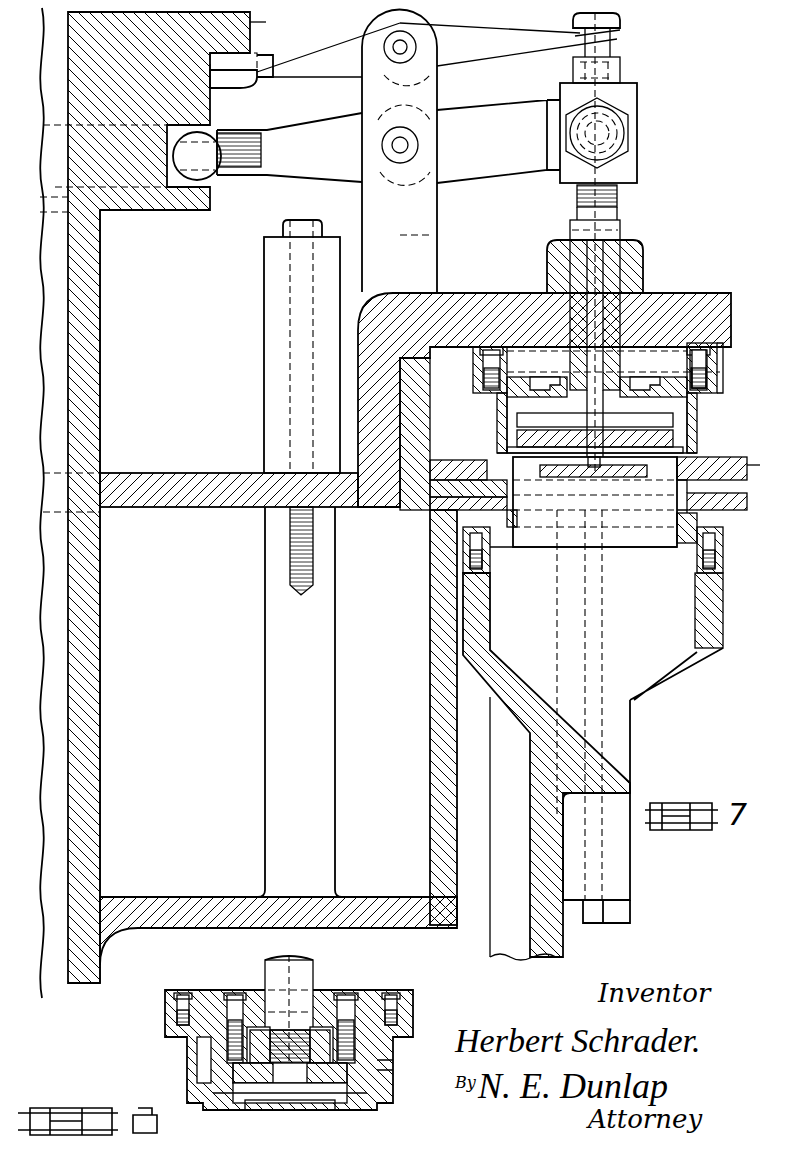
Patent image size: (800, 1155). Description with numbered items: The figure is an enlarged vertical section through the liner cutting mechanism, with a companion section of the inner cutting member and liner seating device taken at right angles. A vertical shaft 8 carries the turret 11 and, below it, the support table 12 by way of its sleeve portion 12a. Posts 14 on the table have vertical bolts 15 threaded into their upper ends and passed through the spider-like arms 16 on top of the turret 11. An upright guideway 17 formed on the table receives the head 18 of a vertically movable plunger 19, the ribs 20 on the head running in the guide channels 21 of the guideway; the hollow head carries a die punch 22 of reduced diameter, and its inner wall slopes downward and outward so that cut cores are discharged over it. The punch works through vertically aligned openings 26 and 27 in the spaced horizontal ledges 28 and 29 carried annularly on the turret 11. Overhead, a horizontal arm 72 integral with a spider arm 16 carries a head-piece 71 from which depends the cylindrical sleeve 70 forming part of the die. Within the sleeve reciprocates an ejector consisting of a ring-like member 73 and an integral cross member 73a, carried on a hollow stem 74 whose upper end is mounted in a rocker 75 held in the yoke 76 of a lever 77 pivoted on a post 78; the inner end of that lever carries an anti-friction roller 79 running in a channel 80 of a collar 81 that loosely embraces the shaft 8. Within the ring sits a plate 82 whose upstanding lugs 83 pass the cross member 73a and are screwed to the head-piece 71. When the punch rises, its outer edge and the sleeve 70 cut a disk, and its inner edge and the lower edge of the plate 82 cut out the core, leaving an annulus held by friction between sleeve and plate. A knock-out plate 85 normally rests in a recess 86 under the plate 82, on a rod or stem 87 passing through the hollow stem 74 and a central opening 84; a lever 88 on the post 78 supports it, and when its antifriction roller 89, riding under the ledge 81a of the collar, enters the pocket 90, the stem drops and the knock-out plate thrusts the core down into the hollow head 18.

In FIG. 7, the vertical shaft 8 is at (43, 747).
In FIG. 7, the turret 11 is at (205, 506).
In FIG. 7, the support table 12 is at (182, 904).
In FIG. 7, the sleeve portion 12a is at (100, 708).
In FIG. 7, the posts 14 is at (274, 748).
In FIG. 7, the vertical bolts 15 is at (313, 545).
In FIG. 7, the spider-like arms 16 is at (245, 220).
In FIG. 7, the upright guideways 17 is at (465, 905).
In FIG. 7, the plunger head 18 is at (722, 630).
In FIG. 7, the plunger 19 is at (518, 962).
In FIG. 7, the ribs 20 is at (620, 850).
In FIG. 7, the guide channels 21 is at (595, 922).
In FIG. 7, the die punch 22 is at (700, 517).
In FIG. 7, the opening 26 is at (700, 466).
In FIG. 7, the opening 27 is at (490, 507).
In FIG. 7, the upper ledge 28 is at (748, 470).
In FIG. 7, the lower ledge 29 is at (748, 500).
In FIG. 7, the sleeve 70 is at (496, 410).
In FIG. 8, the sleeve 70 is at (190, 1068).
In FIG. 7, the head-piece 71 is at (719, 352).
In FIG. 8, the head-piece 71 is at (212, 1000).
In FIG. 7, the horizontal arm 72 is at (722, 322).
In FIG. 7, the ring-like member 73 is at (506, 428).
In FIG. 8, the ring-like member 73 is at (388, 1072).
In FIG. 7, the cross member 73a is at (716, 389).
In FIG. 8, the cross member 73a is at (318, 1045).
In FIG. 7, the hollow stem 74 is at (622, 227).
In FIG. 8, the hollow stem 74 is at (273, 980).
In FIG. 7, the rocker 75 is at (628, 107).
In FIG. 7, the yoke 76 is at (553, 123).
In FIG. 7, the lever 77 is at (335, 126).
In FIG. 7, the post 78 is at (437, 210).
In FIG. 7, the anti-friction roller 79 is at (213, 178).
In FIG. 7, the channel 80 is at (176, 186).
In FIG. 7, the collar 81 is at (130, 203).
In FIG. 7, the overhanging ledge 81a is at (273, 23).
In FIG. 7, the plate 82 is at (672, 441).
In FIG. 8, the plate 82 is at (323, 1082).
In FIG. 7, the lugs 83 is at (595, 368).
In FIG. 8, the lugs 83 is at (210, 1015).
In FIG. 7, the opening 84 is at (660, 424).
In FIG. 8, the opening 84 is at (275, 1088).
In FIG. 7, the knock-out plate 85 is at (570, 478).
In FIG. 7, the recess 86 is at (520, 450).
In FIG. 8, the recess 86 is at (293, 1092).
In FIG. 7, the rod or stem 87 is at (590, 268).
In FIG. 7, the lever 88 is at (503, 34).
In FIG. 7, the antifriction roller 89 is at (236, 88).
In FIG. 7, the recess or pocket 90 is at (258, 47).